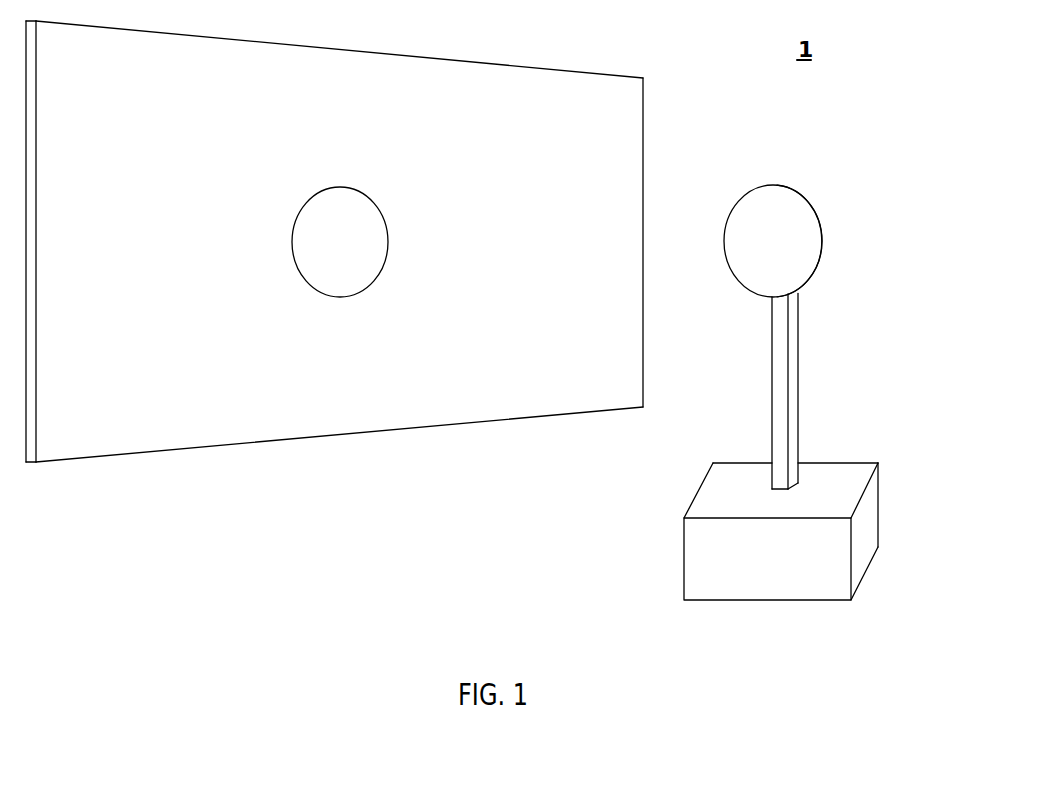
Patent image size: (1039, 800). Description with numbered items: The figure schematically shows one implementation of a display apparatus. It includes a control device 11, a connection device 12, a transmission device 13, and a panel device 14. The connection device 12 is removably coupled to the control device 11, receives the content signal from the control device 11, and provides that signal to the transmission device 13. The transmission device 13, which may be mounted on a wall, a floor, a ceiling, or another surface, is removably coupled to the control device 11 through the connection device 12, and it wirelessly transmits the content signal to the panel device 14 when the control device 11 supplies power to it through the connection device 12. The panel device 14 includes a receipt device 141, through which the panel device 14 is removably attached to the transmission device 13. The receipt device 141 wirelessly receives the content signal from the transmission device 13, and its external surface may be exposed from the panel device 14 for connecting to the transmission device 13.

The control device 11 is at (857, 538).
The connection device 12 is at (798, 407).
The transmission device 13 is at (797, 223).
The panel device 14 is at (517, 87).
The receipt device 141 is at (358, 198).